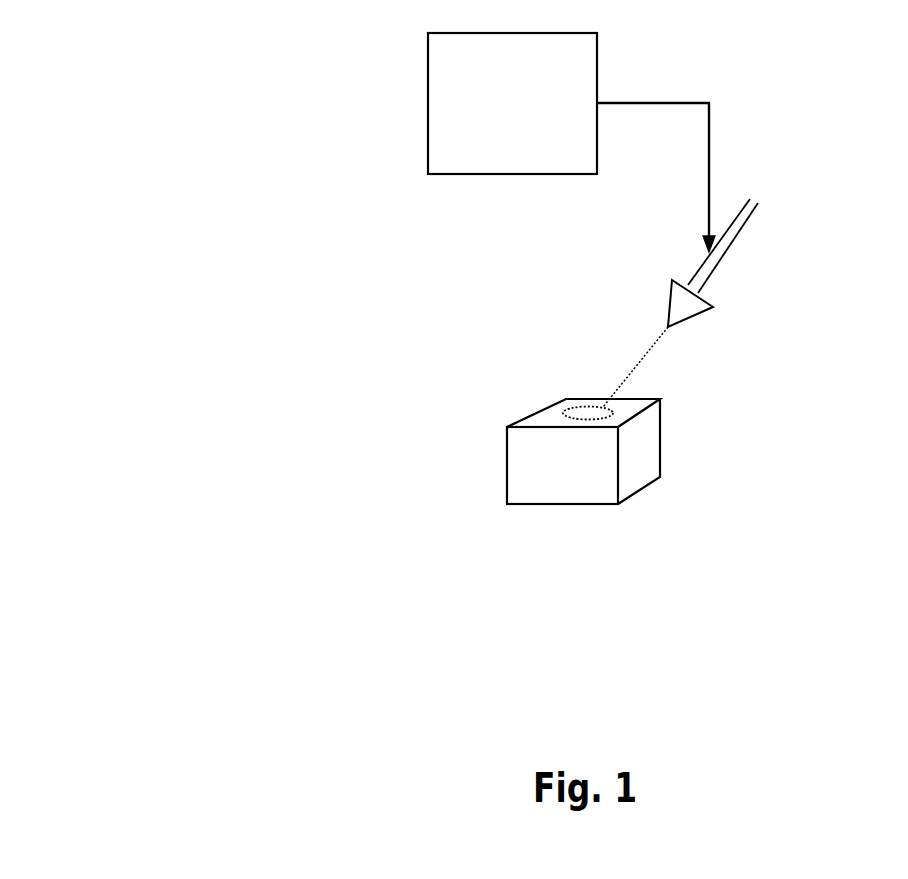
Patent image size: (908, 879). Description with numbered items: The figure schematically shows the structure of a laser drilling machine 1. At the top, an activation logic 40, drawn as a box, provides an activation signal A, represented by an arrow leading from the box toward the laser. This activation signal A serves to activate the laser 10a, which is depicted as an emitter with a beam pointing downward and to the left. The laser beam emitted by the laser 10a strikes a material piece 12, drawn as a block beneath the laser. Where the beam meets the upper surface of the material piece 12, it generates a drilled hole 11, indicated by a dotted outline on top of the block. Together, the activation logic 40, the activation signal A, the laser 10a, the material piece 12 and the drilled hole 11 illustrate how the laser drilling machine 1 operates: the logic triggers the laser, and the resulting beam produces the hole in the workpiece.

The laser drilling machine 1 is at (153, 79).
The activation logic 40 is at (415, 42).
The activation signal A is at (720, 109).
The laser 10a is at (767, 247).
The drilled hole 11 is at (563, 412).
The material piece 12 is at (645, 448).